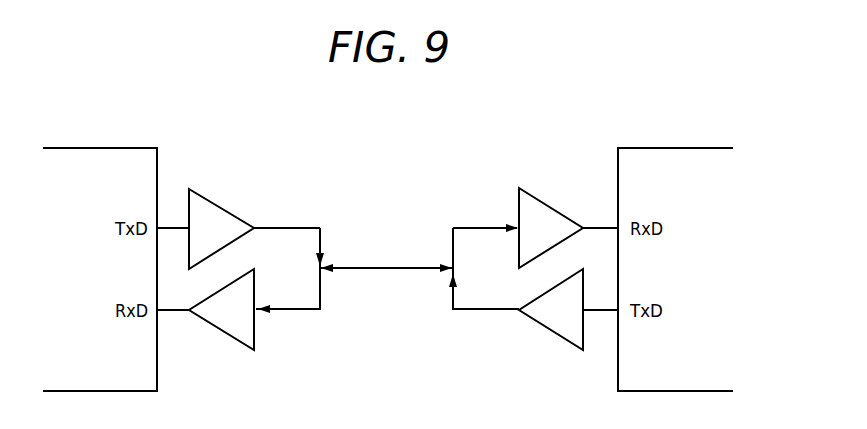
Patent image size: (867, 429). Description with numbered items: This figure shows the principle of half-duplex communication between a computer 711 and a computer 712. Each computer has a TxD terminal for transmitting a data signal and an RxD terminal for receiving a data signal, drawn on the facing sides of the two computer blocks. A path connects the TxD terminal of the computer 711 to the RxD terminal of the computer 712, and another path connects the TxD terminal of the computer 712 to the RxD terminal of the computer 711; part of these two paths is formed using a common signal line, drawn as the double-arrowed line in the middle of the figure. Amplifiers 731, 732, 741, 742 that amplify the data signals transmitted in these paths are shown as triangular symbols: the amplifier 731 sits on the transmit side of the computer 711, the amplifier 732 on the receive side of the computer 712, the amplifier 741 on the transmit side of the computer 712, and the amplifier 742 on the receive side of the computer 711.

The computer 711 is at (67, 147).
The computer 712 is at (652, 147).
The amplifier 731 is at (220, 200).
The amplifier 732 is at (547, 200).
The amplifier 741 is at (550, 335).
The amplifier 742 is at (220, 335).